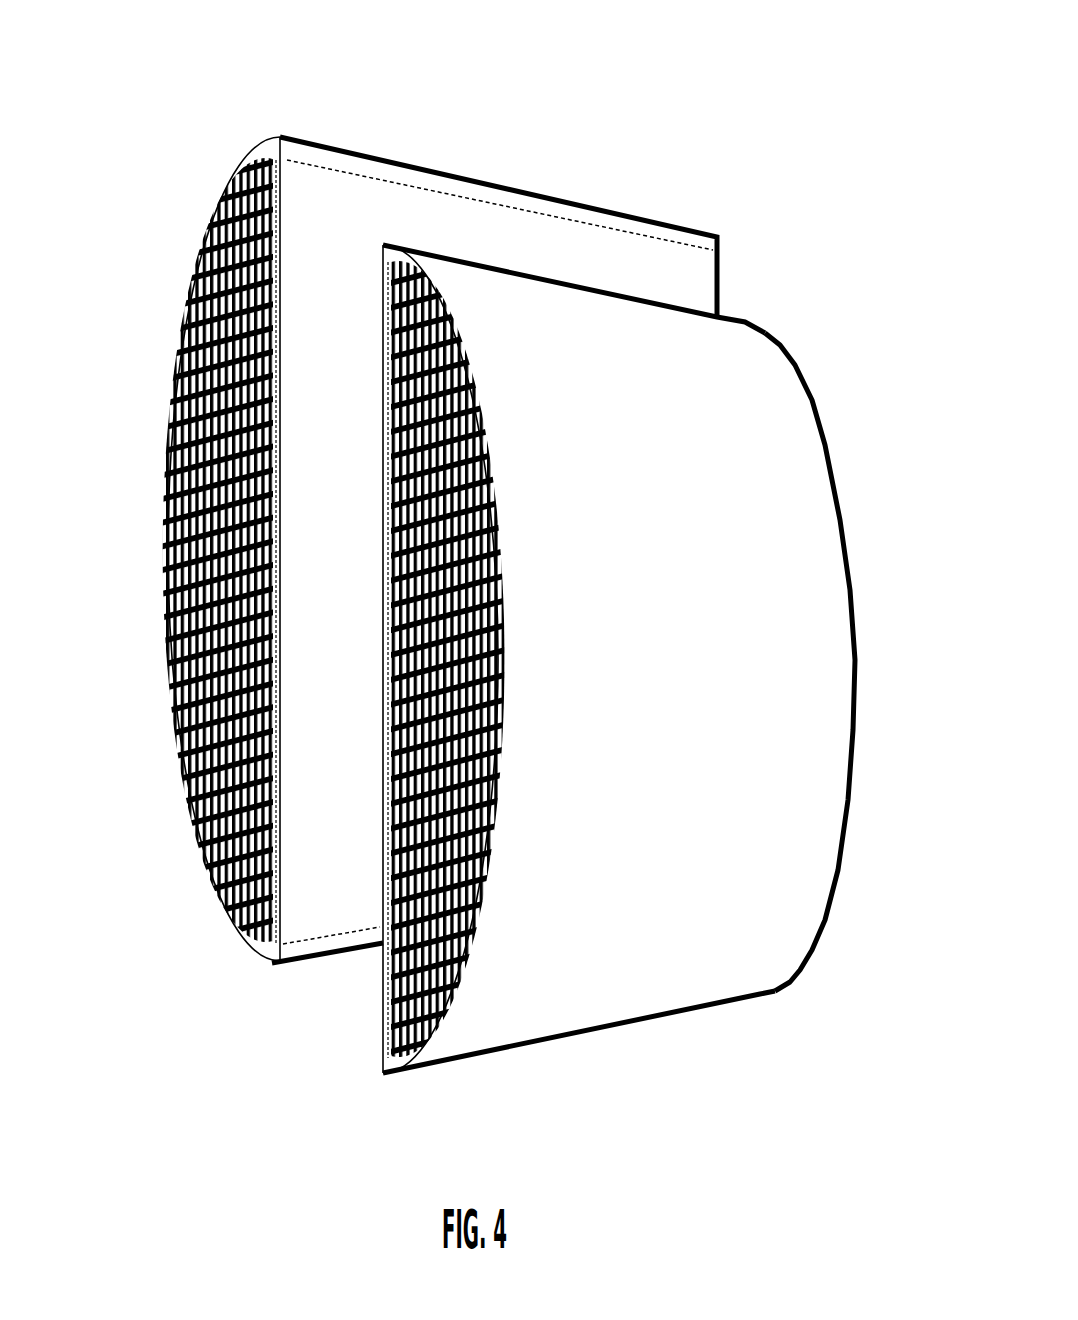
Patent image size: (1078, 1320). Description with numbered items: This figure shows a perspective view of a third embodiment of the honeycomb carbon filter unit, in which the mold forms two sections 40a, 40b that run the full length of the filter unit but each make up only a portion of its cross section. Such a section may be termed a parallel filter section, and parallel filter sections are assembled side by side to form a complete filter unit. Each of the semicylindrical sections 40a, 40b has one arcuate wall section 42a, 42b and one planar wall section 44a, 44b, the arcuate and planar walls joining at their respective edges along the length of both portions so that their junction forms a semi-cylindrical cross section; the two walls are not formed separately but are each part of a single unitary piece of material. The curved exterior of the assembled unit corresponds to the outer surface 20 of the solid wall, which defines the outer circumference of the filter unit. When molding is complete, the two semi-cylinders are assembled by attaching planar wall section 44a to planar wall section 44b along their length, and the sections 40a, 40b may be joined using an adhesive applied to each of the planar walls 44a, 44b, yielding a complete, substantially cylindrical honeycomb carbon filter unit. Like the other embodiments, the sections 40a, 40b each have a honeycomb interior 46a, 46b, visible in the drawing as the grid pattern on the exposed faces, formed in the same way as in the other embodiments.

The outer surface 20 is at (689, 684).
The semicylindrical filter section 40a is at (210, 625).
The semicylindrical filter section 40b is at (617, 616).
The arcuate wall section 42a is at (165, 550).
The arcuate wall section 42b is at (768, 455).
The planar wall section 44a is at (320, 830).
The planar wall section 44b is at (380, 278).
The honeycomb interior 46a is at (175, 386).
The honeycomb interior 46b is at (463, 943).